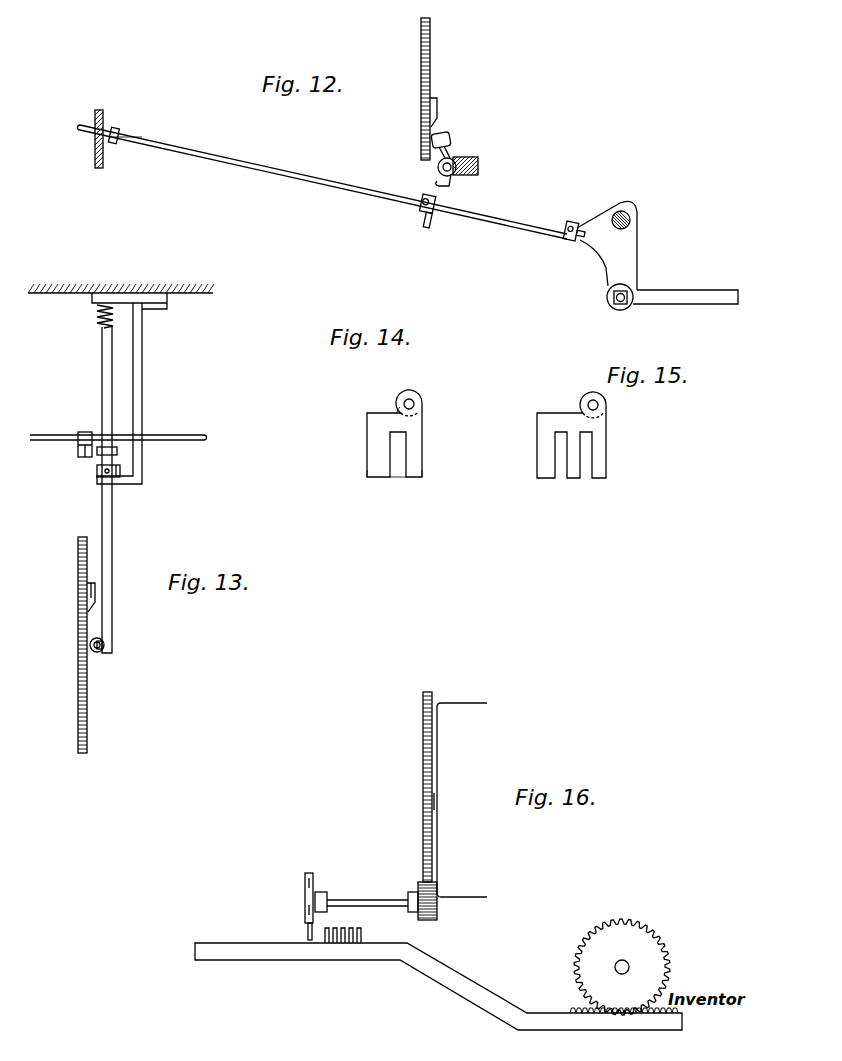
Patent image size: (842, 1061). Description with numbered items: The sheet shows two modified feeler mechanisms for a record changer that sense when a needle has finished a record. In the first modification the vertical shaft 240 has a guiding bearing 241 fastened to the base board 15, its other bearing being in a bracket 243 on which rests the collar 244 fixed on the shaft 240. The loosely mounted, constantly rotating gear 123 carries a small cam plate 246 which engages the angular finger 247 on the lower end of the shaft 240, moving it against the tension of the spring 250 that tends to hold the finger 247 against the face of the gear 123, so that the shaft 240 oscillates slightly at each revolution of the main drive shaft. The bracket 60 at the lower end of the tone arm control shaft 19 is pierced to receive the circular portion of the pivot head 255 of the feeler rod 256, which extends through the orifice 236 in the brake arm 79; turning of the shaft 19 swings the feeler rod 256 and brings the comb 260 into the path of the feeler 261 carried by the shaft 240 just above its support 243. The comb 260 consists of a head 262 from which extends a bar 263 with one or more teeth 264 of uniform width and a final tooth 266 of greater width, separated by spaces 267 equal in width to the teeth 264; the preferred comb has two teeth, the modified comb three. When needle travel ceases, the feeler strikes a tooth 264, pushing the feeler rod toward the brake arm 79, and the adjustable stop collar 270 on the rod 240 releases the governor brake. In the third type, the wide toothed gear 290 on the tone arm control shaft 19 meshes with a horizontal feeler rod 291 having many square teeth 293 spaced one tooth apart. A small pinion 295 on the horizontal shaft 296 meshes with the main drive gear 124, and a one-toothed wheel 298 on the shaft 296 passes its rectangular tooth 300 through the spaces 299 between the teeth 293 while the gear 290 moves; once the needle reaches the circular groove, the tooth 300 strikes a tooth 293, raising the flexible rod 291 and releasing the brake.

In FIG. 13, the base board 15 is at (62, 289).
In FIG. 12, the tone arm control shaft 19 is at (633, 216).
In FIG. 16, the tone arm control shaft 19 is at (622, 960).
In FIG. 12, the bracket 60 is at (632, 257).
In FIG. 12, the brake arm 79 is at (104, 159).
In FIG. 13, the gear 123 is at (78, 548).
In FIG. 16, the main drive gear 124 is at (442, 847).
In FIG. 12, the orifice 236 is at (113, 127).
In FIG. 12, the shaft 240 is at (456, 156).
In FIG. 13, the shaft 240 is at (114, 541).
In FIG. 13, the guiding bearing 241 is at (137, 292).
In FIG. 13, the bracket 243 is at (143, 408).
In FIG. 13, the collar 244 is at (95, 468).
In FIG. 12, the cam plate 246 is at (437, 106).
In FIG. 13, the cam plate 246 is at (80, 603).
In FIG. 12, the angular finger 247 is at (449, 160).
In FIG. 13, the angular finger 247 is at (98, 652).
In FIG. 13, the spring 250 is at (98, 318).
In FIG. 12, the pivot head 255 is at (572, 224).
In FIG. 12, the feeler rod 256 is at (512, 228).
In FIG. 12, the comb 260 is at (422, 216).
In FIG. 13, the comb 260 is at (83, 432).
In FIG. 14, the comb 260 is at (367, 424).
In FIG. 12, the feeler 261 is at (452, 188).
In FIG. 14, the head 262 is at (411, 391).
In FIG. 14, the bar 263 is at (386, 414).
In FIG. 14, the teeth 264 is at (422, 478).
In FIG. 14, the final tooth 266 is at (368, 477).
In FIG. 14, the spaces 267 is at (398, 478).
In FIG. 12, the adjustable stop collar 270 is at (140, 138).
In FIG. 16, the wide toothed gear 290 is at (657, 960).
In FIG. 16, the feeler rod 291 is at (440, 977).
In FIG. 16, the teeth 293 is at (343, 930).
In FIG. 16, the pinion 295 is at (420, 881).
In FIG. 16, the shaft 296 is at (367, 897).
In FIG. 16, the one-toothed wheel 298 is at (305, 883).
In FIG. 16, the spaces 299 is at (334, 947).
In FIG. 16, the tooth 300 is at (307, 937).